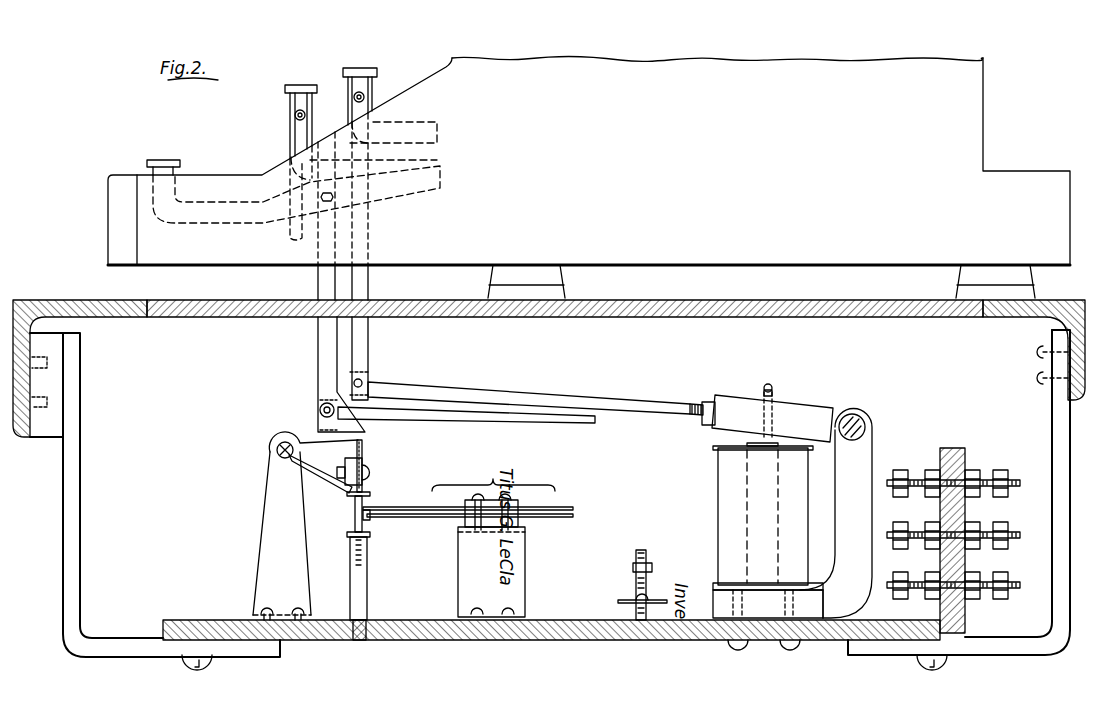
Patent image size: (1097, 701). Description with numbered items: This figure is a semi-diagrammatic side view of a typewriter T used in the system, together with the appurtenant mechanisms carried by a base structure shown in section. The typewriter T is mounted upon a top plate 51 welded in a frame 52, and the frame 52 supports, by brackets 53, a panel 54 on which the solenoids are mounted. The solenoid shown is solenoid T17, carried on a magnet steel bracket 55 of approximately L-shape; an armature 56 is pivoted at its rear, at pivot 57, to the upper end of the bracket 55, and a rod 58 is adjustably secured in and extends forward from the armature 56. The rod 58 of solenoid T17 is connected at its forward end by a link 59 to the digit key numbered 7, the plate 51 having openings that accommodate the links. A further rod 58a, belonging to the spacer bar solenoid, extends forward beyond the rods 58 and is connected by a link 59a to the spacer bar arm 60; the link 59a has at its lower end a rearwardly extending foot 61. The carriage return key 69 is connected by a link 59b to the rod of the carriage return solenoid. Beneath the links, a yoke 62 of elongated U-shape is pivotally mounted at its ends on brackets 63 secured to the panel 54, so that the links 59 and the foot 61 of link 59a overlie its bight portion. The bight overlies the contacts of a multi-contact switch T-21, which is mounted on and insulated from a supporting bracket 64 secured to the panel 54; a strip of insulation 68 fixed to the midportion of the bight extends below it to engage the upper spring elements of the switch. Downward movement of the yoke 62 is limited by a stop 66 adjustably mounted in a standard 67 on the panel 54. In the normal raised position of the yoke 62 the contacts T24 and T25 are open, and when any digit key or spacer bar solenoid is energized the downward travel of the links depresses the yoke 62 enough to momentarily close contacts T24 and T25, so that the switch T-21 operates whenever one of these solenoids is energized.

The typewriter T is at (680, 68).
The digit key 7 is at (356, 62).
The carriage return key 69 is at (312, 72).
The link 59b is at (297, 132).
The spacer bar arm 60 is at (397, 195).
The link 59a is at (325, 281).
The link 59 is at (370, 346).
The foot 61 is at (318, 418).
The rod 58 is at (597, 400).
The rod 58a is at (504, 421).
The top plate 51 is at (222, 320).
The frame 52 is at (117, 320).
The brackets 53 is at (78, 503).
The panel 54 is at (412, 641).
The brackets 63 is at (270, 540).
The yoke 62 is at (365, 447).
The strip of insulation 68 is at (365, 464).
The stop 66 is at (373, 495).
The switch contact T24 is at (355, 511).
The switch contact T25 is at (392, 518).
The standard 67 is at (368, 576).
The supporting bracket 64 is at (513, 570).
The multi-contact switch T-21 is at (493, 473).
The solenoid T17 is at (720, 506).
The armature 56 is at (806, 404).
The pivot 57 is at (862, 415).
The magnet steel bracket 55 is at (863, 456).